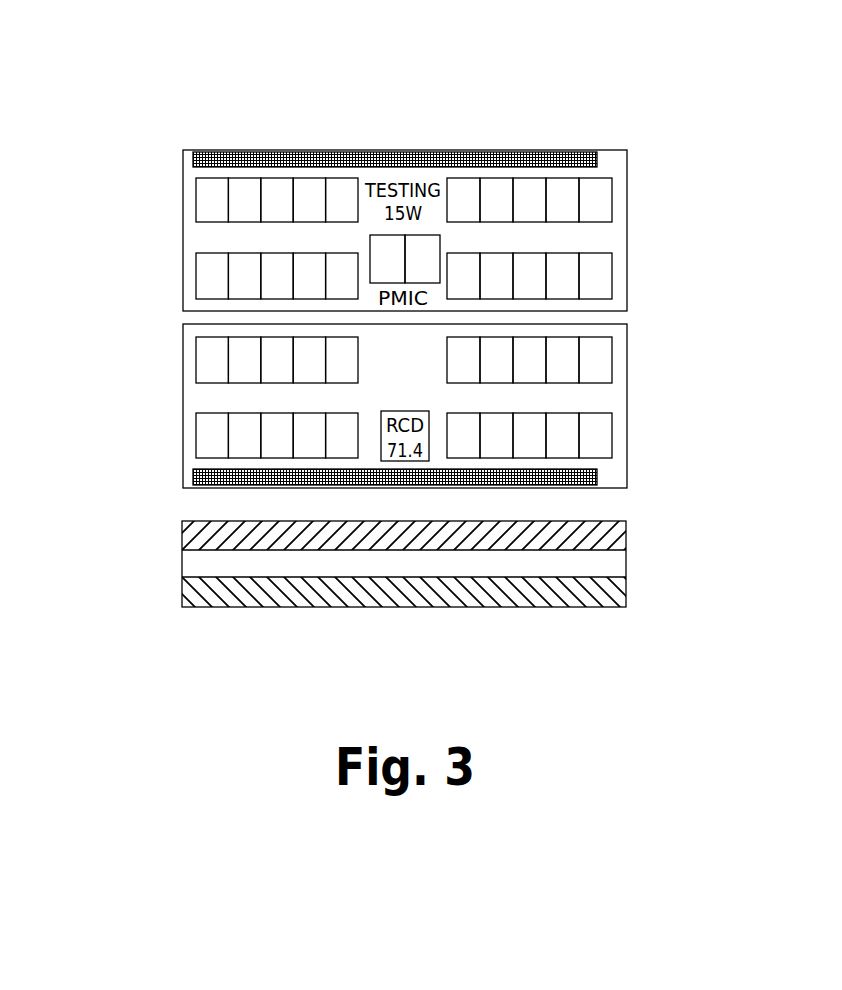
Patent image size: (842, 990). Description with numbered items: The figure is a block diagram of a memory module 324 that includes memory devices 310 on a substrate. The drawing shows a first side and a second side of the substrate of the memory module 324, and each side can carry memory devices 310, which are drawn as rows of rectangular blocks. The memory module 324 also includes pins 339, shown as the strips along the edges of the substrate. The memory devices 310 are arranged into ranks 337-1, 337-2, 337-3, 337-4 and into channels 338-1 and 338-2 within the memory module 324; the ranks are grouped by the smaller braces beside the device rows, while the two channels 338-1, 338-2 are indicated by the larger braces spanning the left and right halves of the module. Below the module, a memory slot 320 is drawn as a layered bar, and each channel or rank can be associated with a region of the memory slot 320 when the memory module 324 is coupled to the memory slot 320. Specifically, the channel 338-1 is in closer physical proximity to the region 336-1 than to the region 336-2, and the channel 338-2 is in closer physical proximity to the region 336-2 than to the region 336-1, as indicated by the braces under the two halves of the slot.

The memory module 324 is at (424, 66).
The memory devices 310 is at (212, 184).
The pins 339 is at (563, 164).
The memory slot 320 is at (182, 560).
The region 336-1 is at (405, 612).
The region 336-2 is at (407, 612).
The rank 337-1 is at (187, 337).
The rank 337-2 is at (623, 337).
The rank 337-3 is at (187, 180).
The rank 337-4 is at (623, 180).
The channel 338-1 is at (145, 180).
The channel 338-2 is at (675, 180).